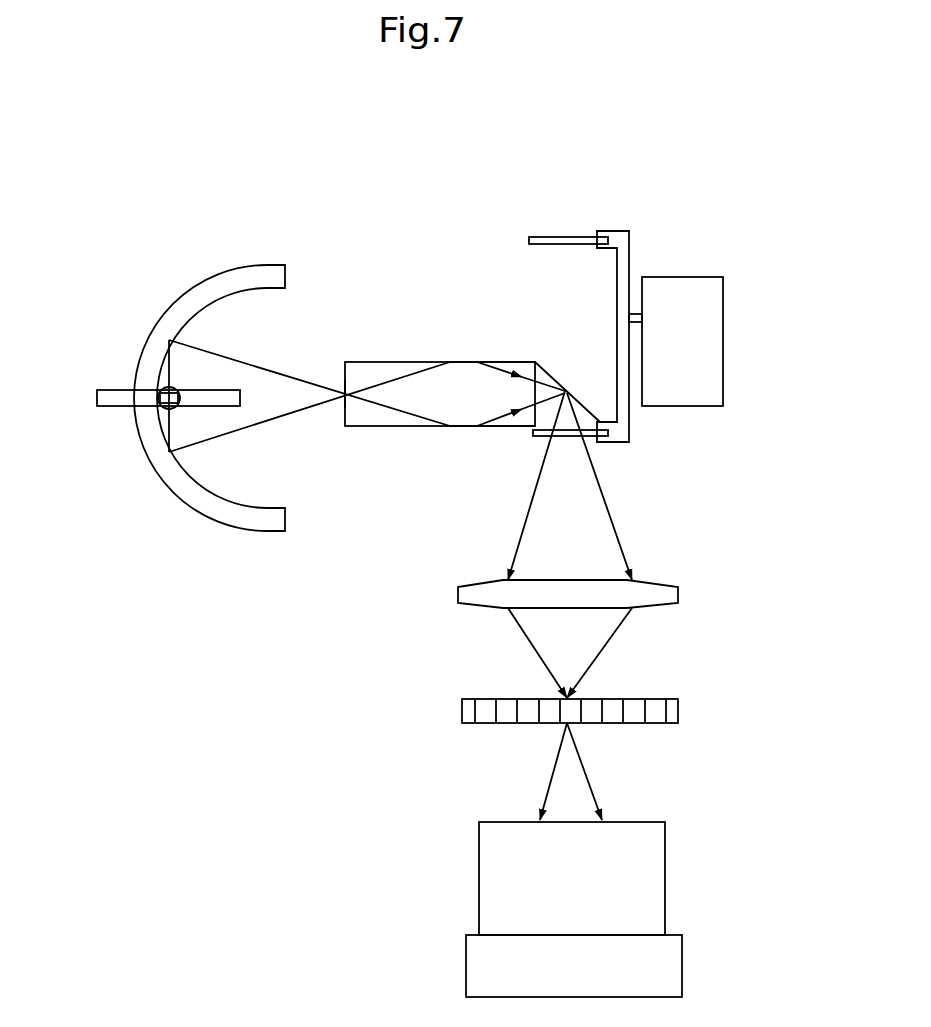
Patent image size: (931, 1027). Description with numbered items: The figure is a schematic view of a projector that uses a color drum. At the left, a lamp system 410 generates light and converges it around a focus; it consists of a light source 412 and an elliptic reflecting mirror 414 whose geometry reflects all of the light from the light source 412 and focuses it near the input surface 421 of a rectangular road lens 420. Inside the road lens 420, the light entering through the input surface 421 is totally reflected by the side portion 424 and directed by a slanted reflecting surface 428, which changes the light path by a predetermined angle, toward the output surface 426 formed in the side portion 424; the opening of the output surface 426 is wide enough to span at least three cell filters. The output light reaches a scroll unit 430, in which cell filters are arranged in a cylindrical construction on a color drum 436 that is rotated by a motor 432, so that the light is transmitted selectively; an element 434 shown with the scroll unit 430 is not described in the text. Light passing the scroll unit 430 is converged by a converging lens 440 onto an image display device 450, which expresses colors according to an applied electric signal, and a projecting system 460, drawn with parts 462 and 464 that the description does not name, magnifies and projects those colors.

The lamp system 410 is at (164, 353).
The light source 412 is at (163, 385).
The elliptic reflecting mirror 414 is at (268, 265).
The road lens 420 is at (432, 409).
The input surface 421 is at (345, 393).
The side portion 424 is at (493, 362).
The output surface 426 is at (556, 418).
The reflecting surface 428 is at (578, 382).
The scroll unit 430 is at (686, 324).
The motor 432 is at (723, 339).
The lower support arm 434 is at (634, 428).
The color drum 436 is at (565, 237).
The converging lens 440 is at (667, 595).
The image display device 450 is at (660, 715).
The projecting system 460 is at (563, 909).
The display panel 462 is at (657, 862).
The base plate 464 is at (682, 968).